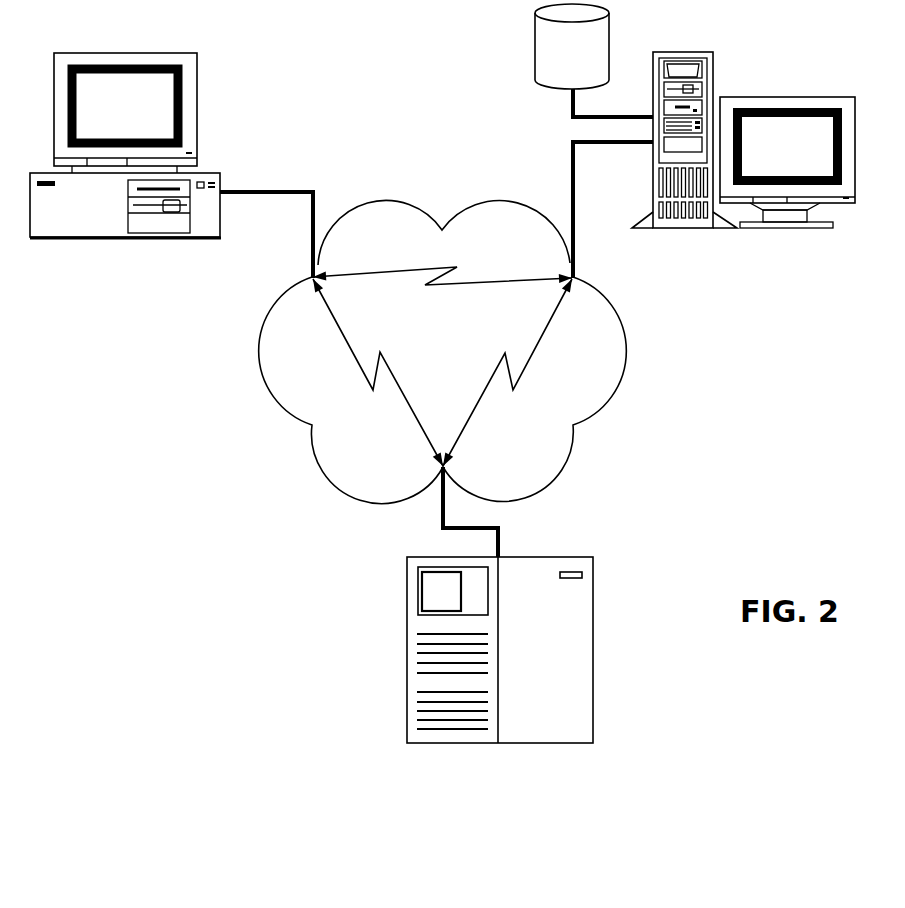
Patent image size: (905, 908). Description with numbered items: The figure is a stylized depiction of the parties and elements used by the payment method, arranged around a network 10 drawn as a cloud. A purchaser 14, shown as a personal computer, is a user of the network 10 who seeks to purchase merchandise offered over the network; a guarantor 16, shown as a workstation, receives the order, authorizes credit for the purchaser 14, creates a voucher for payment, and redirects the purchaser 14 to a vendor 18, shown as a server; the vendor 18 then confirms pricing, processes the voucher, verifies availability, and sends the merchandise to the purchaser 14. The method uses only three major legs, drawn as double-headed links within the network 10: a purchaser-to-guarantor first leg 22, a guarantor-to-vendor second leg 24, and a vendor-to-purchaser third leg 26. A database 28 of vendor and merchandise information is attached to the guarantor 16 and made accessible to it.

The network 10 is at (250, 500).
The purchaser 14 is at (140, 117).
The guarantor 16 is at (803, 157).
The vendor 18 is at (561, 662).
The first leg 22 is at (479, 280).
The second leg 24 is at (482, 402).
The third leg 26 is at (403, 402).
The database 28 is at (587, 65).